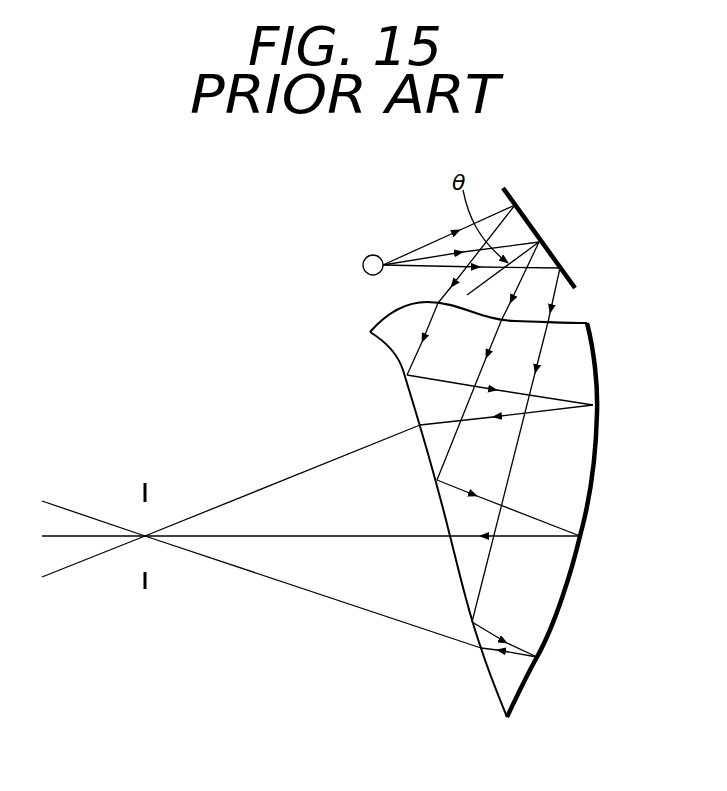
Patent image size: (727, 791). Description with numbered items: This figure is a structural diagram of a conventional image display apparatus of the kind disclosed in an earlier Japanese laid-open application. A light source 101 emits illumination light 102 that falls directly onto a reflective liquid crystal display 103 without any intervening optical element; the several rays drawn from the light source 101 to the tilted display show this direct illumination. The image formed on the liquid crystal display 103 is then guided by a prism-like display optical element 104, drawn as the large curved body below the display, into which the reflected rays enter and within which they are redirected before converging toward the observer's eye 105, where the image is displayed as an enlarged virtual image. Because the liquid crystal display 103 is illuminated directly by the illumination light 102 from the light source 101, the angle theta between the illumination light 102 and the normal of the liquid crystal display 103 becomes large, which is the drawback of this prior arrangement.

The light source 101 is at (363, 265).
The illumination light 102 is at (437, 238).
The reflective liquid crystal display 103 is at (503, 188).
The prism-like display optical element 104 is at (573, 583).
The observer's eye 105 is at (145, 520).